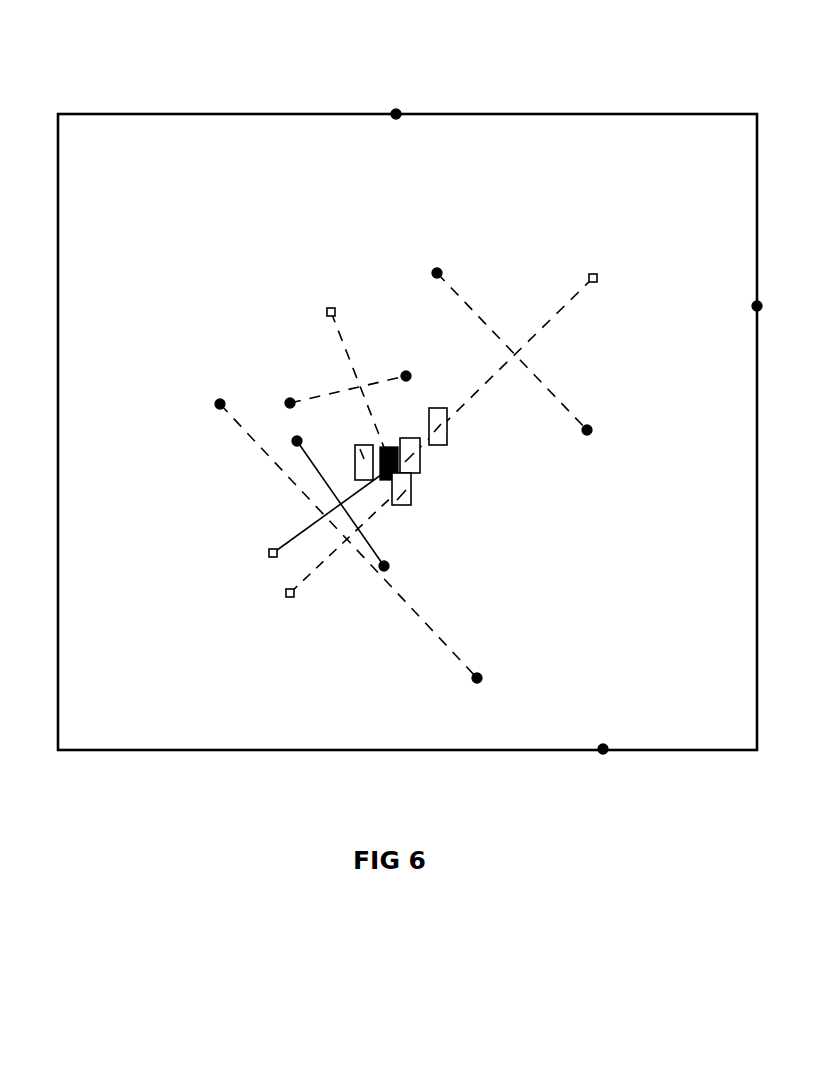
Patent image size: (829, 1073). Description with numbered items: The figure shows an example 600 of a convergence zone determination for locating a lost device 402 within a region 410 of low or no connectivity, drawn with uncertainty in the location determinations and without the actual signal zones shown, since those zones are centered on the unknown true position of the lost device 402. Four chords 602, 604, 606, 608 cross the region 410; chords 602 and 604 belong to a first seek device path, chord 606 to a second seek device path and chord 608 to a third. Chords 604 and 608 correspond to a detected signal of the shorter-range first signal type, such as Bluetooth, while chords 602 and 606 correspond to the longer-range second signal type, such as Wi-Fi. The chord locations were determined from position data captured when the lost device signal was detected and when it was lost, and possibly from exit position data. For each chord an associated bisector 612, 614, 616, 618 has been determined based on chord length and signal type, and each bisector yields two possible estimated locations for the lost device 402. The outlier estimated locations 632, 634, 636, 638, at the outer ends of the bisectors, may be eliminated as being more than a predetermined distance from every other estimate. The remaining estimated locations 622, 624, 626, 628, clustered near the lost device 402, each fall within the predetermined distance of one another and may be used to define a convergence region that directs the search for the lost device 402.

The example of convergence zone determination 600 is at (90, 66).
The region of low or no connectivity 410 is at (291, 114).
The lost device 402 is at (389, 446).
The chord 602 is at (252, 434).
The chord 604 is at (371, 541).
The chord 606 is at (463, 299).
The chord 608 is at (364, 385).
The bisector 612 is at (326, 560).
The bisector 614 is at (303, 531).
The bisector 616 is at (556, 311).
The bisector 618 is at (342, 362).
The estimated location 622 is at (411, 500).
The estimated location 624 is at (420, 460).
The estimated location 626 is at (447, 432).
The estimated location 628 is at (354, 464).
The outlier estimated location 632 is at (289, 597).
The outlier estimated location 634 is at (272, 557).
The outlier estimated location 636 is at (593, 274).
The outlier estimated location 638 is at (331, 308).